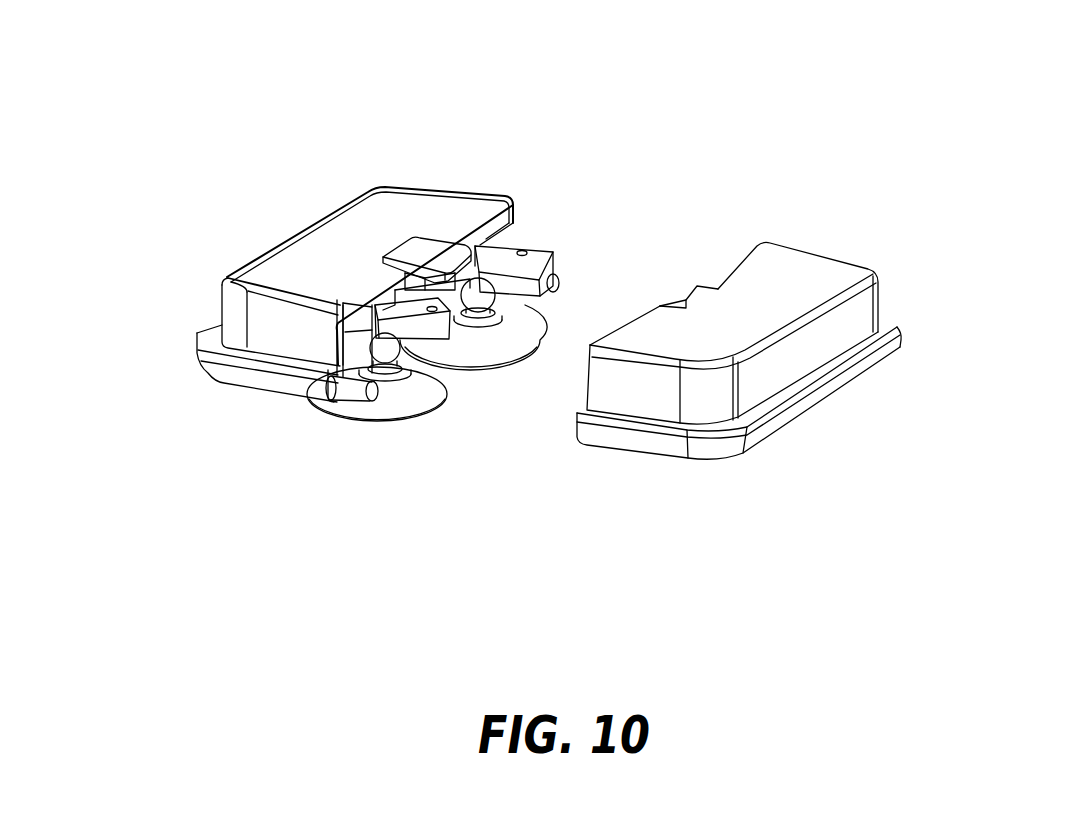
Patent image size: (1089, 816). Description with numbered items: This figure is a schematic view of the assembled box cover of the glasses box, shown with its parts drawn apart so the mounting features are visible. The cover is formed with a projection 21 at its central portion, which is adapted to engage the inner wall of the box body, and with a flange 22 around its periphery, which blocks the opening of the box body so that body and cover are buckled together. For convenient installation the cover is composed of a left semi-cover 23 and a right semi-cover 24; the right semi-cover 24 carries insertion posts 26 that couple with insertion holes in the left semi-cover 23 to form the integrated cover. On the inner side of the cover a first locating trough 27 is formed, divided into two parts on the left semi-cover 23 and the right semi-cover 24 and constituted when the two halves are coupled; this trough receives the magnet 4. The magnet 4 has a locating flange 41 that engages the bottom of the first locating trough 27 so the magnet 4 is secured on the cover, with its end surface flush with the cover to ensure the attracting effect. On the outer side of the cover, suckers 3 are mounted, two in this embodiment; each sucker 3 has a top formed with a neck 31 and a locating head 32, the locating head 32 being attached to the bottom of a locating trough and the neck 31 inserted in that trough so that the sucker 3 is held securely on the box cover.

The sucker 3 is at (390, 403).
The magnet 4 is at (418, 252).
The projection 21 is at (237, 283).
The flange 22 is at (210, 364).
The left semi-cover 23 is at (860, 324).
The right semi-cover 24 is at (238, 314).
The insertion posts 26 is at (372, 285).
The first locating trough 27 is at (697, 284).
The neck 31 is at (441, 407).
The locating head 32 is at (408, 340).
The locating flange 41 is at (457, 247).